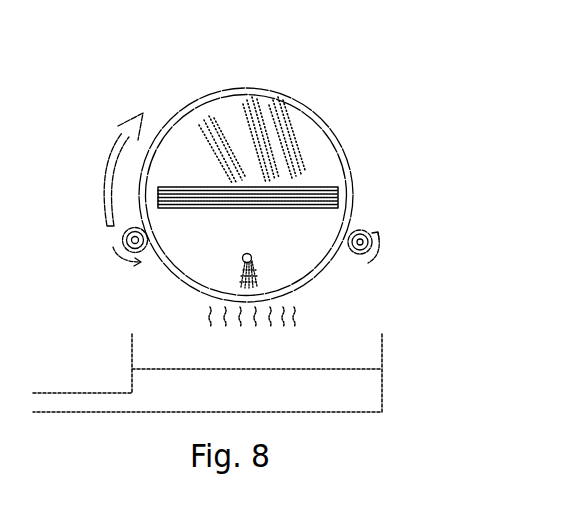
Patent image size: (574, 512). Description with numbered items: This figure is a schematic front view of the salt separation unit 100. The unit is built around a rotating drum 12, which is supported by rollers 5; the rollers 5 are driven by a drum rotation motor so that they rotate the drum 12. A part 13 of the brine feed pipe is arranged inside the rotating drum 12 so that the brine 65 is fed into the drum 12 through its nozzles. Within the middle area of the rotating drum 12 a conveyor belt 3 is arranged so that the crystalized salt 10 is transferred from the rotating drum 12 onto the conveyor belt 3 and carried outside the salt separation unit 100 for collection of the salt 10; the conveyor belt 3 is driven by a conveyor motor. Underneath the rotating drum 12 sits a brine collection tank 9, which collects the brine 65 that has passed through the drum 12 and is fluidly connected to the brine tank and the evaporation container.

The salt separation unit 100 is at (242, 56).
The rotating drum 12 is at (338, 142).
The crystalized salt 10 is at (232, 158).
The conveyor belt 3 is at (320, 186).
The part of the brine feed pipe 13 is at (248, 253).
The rollers 5 is at (357, 229).
The brine 65 is at (290, 320).
The brine collection tank 9 is at (360, 391).